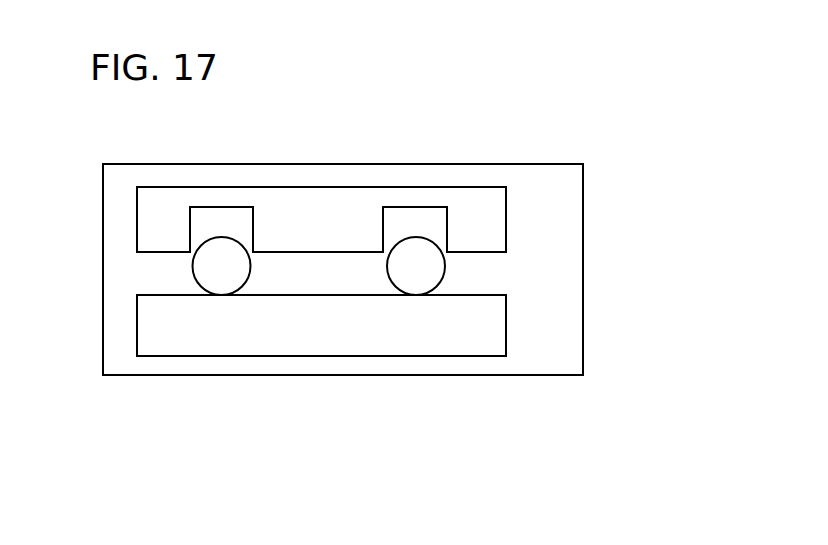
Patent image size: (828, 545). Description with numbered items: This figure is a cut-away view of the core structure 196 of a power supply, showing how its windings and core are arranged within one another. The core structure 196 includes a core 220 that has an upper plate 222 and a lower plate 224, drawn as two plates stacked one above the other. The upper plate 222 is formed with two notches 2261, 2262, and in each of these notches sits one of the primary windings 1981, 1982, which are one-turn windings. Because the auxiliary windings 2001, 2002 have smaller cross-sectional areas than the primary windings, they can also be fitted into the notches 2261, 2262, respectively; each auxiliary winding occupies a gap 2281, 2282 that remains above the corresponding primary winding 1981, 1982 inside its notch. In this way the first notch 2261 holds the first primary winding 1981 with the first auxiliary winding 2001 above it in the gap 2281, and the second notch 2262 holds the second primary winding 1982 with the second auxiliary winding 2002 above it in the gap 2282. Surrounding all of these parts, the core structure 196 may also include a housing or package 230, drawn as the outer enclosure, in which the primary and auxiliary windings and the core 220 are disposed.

The core structure 196 is at (371, 121).
The core 220 is at (524, 365).
The housing or package 230 is at (583, 313).
The upper plate 222 is at (308, 187).
The lower plate 224 is at (389, 357).
The auxiliary winding 2001 is at (221, 217).
The auxiliary winding 2002 is at (415, 217).
The gap 2281 is at (197, 223).
The gap 2282 is at (437, 219).
The primary winding 1981 is at (232, 280).
The primary winding 1982 is at (426, 279).
The notch 2261 is at (258, 263).
The notch 2262 is at (378, 263).